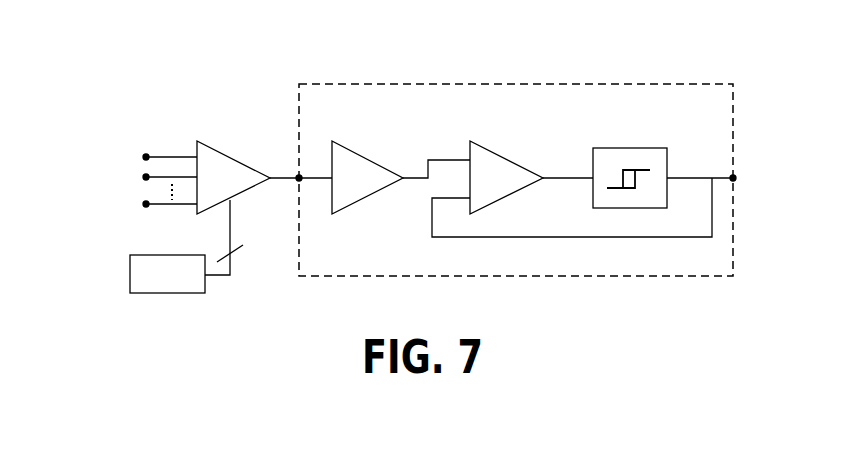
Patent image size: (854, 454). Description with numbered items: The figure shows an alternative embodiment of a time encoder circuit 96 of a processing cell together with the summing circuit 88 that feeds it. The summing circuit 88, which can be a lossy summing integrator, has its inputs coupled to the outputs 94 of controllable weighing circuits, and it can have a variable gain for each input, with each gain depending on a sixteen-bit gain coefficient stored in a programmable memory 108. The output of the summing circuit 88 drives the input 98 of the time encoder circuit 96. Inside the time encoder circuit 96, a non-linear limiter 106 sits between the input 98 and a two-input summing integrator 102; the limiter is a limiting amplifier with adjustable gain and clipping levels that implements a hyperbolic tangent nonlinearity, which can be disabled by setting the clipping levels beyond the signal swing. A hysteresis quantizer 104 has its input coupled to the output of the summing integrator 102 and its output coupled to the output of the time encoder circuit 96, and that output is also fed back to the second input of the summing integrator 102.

The summing circuit 88 is at (223, 150).
The outputs of controllable weighing circuits 94 is at (146, 157).
The time encoder circuit 96 is at (639, 84).
The input of the time encoder circuit 98 is at (297, 181).
The two input summing integrator 102 is at (527, 162).
The hysteresis quantizer 104 is at (632, 148).
The non-linear limiter 106 is at (385, 165).
The programmable memory 108 is at (130, 279).